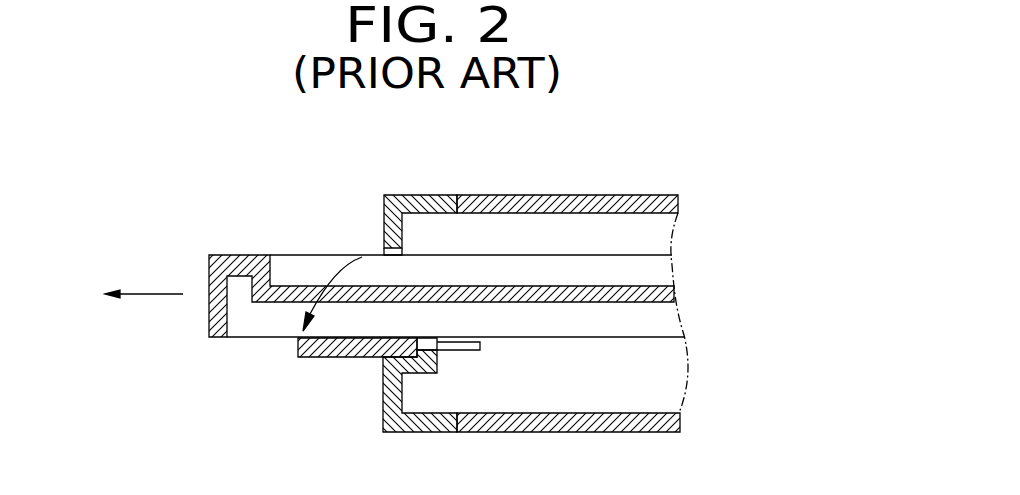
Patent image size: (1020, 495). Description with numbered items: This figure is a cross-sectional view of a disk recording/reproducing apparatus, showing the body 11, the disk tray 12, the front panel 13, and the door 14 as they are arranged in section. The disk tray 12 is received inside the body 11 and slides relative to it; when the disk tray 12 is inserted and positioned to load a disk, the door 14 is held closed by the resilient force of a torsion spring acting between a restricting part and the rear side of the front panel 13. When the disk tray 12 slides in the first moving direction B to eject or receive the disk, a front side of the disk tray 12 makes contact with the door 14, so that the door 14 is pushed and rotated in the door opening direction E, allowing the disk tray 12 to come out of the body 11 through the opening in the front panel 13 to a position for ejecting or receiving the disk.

The body 11 is at (585, 193).
The disk tray 12 is at (237, 254).
The front panel 13 is at (424, 193).
The door 14 is at (333, 359).
The door opening direction E is at (332, 268).
The first moving direction B is at (144, 280).